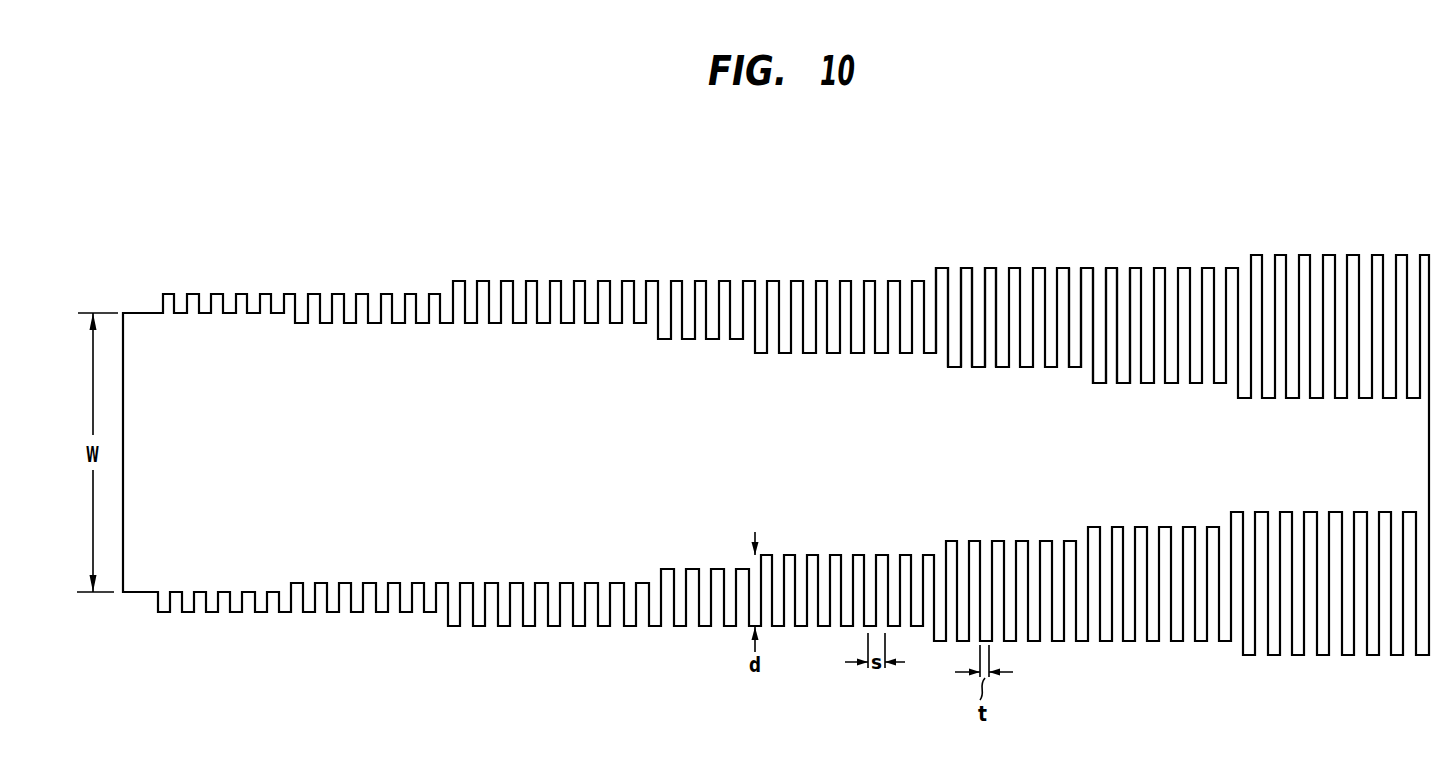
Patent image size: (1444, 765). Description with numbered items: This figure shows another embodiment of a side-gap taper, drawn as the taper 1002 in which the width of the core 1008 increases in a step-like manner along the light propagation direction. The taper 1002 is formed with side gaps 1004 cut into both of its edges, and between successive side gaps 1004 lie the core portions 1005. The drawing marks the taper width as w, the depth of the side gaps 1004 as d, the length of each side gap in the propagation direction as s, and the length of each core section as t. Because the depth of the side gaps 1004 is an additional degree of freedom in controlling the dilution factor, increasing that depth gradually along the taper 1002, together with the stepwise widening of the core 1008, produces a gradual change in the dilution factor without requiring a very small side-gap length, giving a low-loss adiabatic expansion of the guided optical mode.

The taper 1002 is at (712, 240).
The side gaps 1004 is at (1122, 272).
The core portions 1005 is at (990, 262).
The core 1008 is at (527, 490).